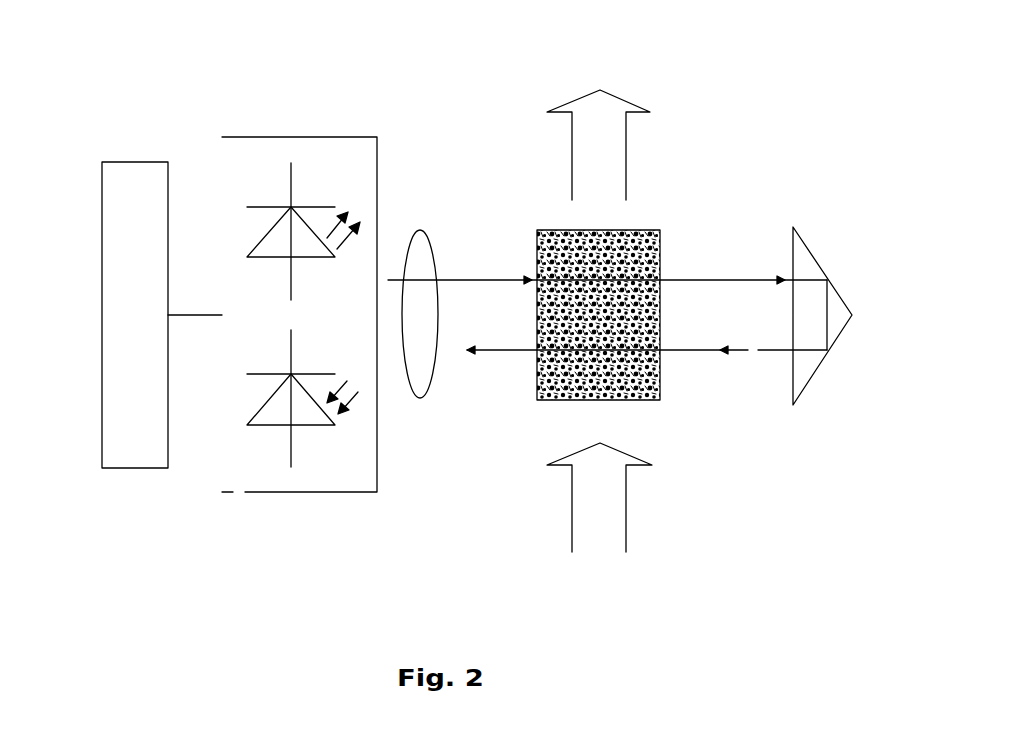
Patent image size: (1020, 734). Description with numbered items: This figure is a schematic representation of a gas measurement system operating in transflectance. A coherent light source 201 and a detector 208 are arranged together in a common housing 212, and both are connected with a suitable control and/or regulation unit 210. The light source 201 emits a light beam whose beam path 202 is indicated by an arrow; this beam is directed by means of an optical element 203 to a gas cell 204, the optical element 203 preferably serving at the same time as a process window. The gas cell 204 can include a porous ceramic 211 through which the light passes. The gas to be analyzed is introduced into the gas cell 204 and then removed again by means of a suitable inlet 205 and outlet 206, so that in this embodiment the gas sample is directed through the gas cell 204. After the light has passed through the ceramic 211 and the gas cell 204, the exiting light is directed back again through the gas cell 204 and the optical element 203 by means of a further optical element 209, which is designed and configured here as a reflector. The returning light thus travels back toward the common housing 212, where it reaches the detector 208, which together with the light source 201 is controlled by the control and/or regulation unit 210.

The coherent light source 201 is at (307, 190).
The beam path 202 is at (750, 352).
The optical element 203 is at (428, 243).
The gas cell 204 is at (548, 396).
The inlet 205 is at (600, 498).
The outlet 206 is at (598, 145).
The detector 208 is at (270, 440).
The further optical element 209 is at (822, 262).
The control and/or regulation unit 210 is at (133, 200).
The porous ceramic 211 is at (573, 253).
The common housing 212 is at (257, 138).